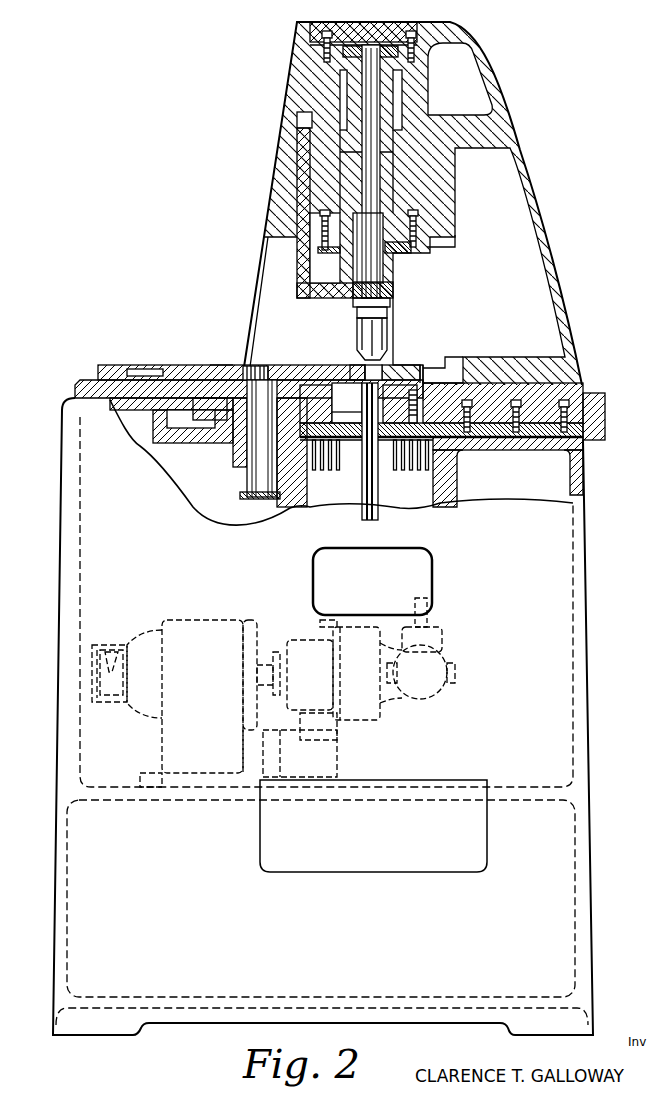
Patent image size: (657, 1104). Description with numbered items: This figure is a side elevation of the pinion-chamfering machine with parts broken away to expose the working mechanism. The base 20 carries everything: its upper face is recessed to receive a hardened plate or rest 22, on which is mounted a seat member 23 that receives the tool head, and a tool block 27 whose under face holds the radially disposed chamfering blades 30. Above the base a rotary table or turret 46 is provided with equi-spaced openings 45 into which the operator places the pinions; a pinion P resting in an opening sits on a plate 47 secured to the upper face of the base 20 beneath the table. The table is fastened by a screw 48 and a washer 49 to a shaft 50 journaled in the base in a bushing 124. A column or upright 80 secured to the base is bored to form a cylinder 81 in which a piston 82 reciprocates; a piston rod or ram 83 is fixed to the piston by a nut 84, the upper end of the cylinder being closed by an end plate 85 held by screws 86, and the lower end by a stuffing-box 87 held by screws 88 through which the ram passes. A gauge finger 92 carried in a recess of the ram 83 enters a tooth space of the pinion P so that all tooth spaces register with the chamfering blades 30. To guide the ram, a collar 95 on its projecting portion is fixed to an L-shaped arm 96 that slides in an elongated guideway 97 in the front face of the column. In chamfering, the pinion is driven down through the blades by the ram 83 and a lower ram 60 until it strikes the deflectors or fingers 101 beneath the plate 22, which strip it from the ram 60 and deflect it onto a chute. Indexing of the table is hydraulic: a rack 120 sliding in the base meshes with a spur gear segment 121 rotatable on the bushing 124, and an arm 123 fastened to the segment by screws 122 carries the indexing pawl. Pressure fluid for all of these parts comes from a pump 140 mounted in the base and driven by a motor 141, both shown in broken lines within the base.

The base 20 is at (560, 864).
The hardened plate or rest 22 is at (445, 440).
The seat member 23 is at (315, 370).
The tool block 27 is at (337, 373).
The chamfering blades 30 is at (416, 364).
The openings 45 is at (142, 372).
The rotary table or turret 46 is at (192, 367).
The plate 47 is at (76, 383).
The screw 48 is at (263, 366).
The washer 49 is at (272, 366).
The shaft 50 is at (250, 473).
The ram 60 is at (380, 495).
The column or upright 80 is at (526, 163).
The cylinder 81 is at (397, 200).
The piston 82 is at (385, 105).
The piston rod or ram 83 is at (392, 196).
The nut 84 is at (350, 54).
The end plate 85 is at (320, 31).
The screws 86 is at (420, 15).
The stuffing-box 87 is at (430, 250).
The screws 88 is at (418, 226).
The gauge finger 92 is at (374, 337).
The collar 95 is at (395, 290).
The L-shaped arm 96 is at (303, 266).
The guideway 97 is at (298, 122).
The deflectors or fingers 101 is at (438, 470).
The rack 120 is at (150, 425).
The spur gear segment 121 is at (226, 420).
The screws 122 is at (207, 410).
The arm 123 is at (218, 366).
The bushing 124 is at (236, 494).
The pump 140 is at (290, 645).
The motor 141 is at (210, 632).
The pinion P is at (386, 367).